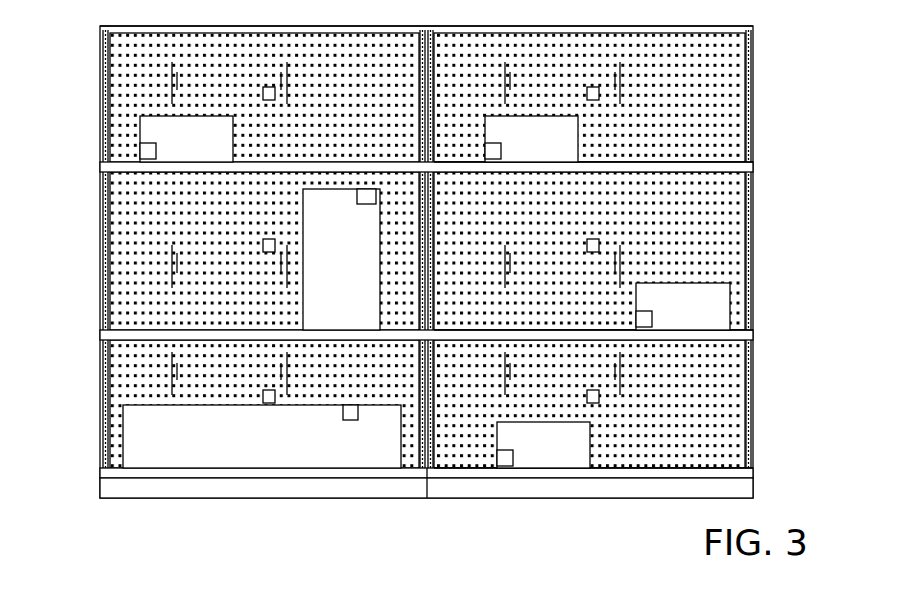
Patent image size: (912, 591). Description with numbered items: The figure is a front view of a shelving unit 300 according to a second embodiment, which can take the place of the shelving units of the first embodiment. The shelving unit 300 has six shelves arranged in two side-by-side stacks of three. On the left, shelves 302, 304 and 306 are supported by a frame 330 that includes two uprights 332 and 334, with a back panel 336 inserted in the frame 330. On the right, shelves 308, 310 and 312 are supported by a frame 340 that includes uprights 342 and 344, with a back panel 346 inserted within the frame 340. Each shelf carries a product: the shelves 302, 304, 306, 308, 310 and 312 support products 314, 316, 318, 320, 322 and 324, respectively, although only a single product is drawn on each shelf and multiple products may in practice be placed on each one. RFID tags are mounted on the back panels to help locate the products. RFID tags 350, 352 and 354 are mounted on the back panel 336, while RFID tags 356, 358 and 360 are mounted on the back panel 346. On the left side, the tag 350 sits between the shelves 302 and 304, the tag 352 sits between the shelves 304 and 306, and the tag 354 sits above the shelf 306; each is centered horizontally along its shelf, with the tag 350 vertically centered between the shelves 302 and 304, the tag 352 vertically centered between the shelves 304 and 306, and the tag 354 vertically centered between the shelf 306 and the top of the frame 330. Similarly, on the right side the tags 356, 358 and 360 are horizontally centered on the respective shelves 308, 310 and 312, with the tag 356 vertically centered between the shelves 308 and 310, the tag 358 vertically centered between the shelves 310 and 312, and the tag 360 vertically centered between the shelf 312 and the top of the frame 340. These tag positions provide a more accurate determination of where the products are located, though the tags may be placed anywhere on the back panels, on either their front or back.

The shelving unit 300 is at (124, 513).
The shelf 302 is at (100, 478).
The shelf 304 is at (100, 341).
The shelf 306 is at (100, 173).
The shelf 308 is at (753, 473).
The shelf 310 is at (753, 334).
The shelf 312 is at (753, 166).
The product 314 is at (262, 436).
The product 316 is at (341, 259).
The product 318 is at (186, 139).
The product 320 is at (543, 445).
The product 322 is at (683, 306).
The product 324 is at (531, 139).
The frame 330 is at (142, 27).
The upright 332 is at (100, 42).
The upright 334 is at (420, 31).
The back panel 336 is at (200, 45).
The frame 340 is at (650, 26).
The upright 342 is at (432, 31).
The upright 344 is at (755, 28).
The back panel 346 is at (519, 47).
The RFID tag 350 is at (264, 395).
The RFID tag 352 is at (263, 245).
The RFID tag 354 is at (263, 93).
The RFID tag 356 is at (587, 395).
The RFID tag 358 is at (587, 245).
The RFID tag 360 is at (587, 92).